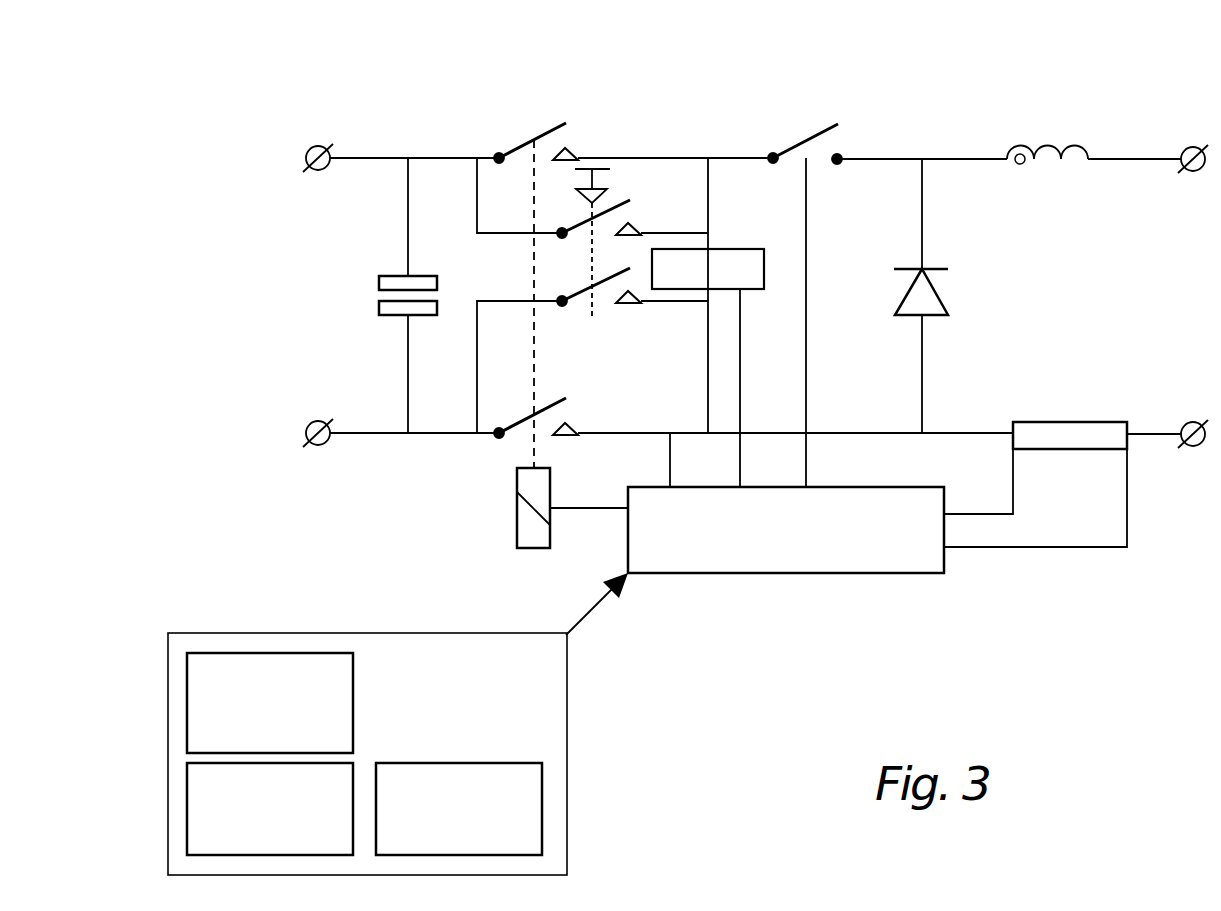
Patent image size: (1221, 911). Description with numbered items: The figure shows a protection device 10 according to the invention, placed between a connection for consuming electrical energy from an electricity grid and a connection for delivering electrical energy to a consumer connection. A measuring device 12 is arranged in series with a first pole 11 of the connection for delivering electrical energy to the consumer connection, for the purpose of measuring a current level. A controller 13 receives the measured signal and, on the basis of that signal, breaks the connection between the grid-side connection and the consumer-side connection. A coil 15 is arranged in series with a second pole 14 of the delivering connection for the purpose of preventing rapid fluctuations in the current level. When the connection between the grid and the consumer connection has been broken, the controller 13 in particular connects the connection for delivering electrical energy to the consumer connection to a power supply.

The protection device 10 is at (262, 96).
The first pole 11 is at (966, 433).
The measuring device 12 is at (1068, 433).
The controller 13 is at (783, 562).
The second pole 14 is at (962, 158).
The coil 15 is at (1045, 147).